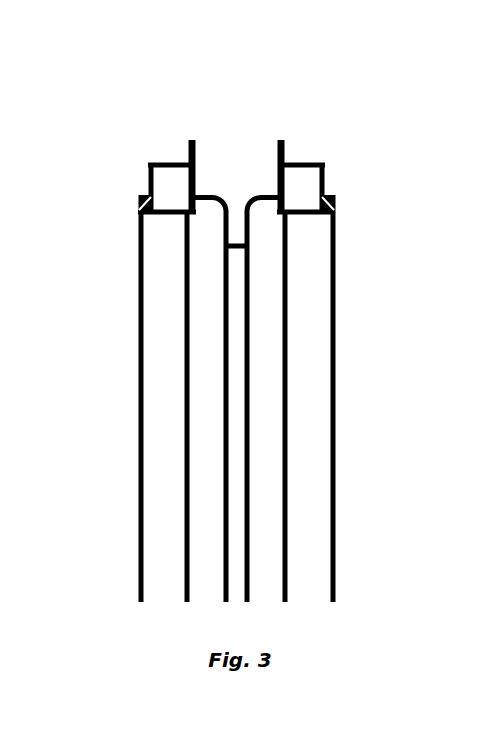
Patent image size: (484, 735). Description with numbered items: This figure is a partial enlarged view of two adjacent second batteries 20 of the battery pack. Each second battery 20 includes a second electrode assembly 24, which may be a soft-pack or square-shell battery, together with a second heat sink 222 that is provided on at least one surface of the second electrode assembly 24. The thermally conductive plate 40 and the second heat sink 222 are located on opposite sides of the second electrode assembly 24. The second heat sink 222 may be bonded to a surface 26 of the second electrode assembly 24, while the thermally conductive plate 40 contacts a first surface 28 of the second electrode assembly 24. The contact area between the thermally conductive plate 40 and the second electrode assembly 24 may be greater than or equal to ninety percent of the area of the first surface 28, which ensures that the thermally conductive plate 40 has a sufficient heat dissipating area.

The second battery 20 is at (163, 155).
The second electrode assembly 24 is at (210, 218).
The surface 26 is at (140, 228).
The first surface 28 is at (230, 217).
The thermally conductive plate 40 is at (235, 507).
The second heat sink 222 is at (162, 310).